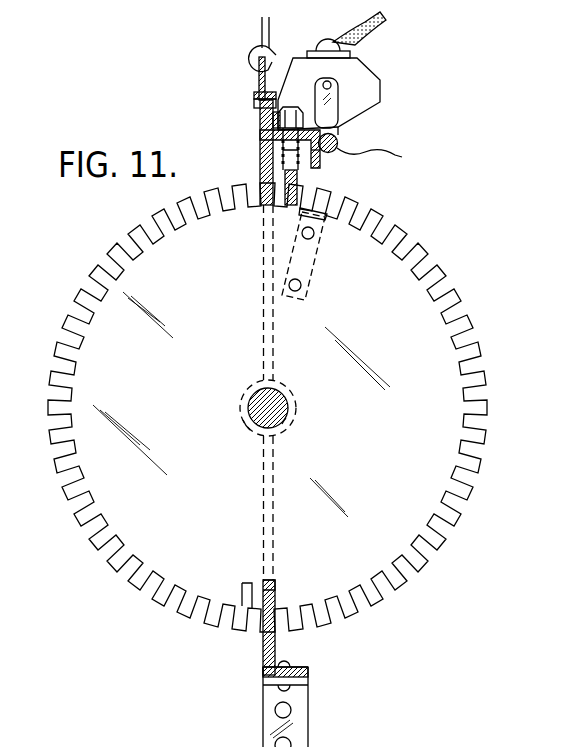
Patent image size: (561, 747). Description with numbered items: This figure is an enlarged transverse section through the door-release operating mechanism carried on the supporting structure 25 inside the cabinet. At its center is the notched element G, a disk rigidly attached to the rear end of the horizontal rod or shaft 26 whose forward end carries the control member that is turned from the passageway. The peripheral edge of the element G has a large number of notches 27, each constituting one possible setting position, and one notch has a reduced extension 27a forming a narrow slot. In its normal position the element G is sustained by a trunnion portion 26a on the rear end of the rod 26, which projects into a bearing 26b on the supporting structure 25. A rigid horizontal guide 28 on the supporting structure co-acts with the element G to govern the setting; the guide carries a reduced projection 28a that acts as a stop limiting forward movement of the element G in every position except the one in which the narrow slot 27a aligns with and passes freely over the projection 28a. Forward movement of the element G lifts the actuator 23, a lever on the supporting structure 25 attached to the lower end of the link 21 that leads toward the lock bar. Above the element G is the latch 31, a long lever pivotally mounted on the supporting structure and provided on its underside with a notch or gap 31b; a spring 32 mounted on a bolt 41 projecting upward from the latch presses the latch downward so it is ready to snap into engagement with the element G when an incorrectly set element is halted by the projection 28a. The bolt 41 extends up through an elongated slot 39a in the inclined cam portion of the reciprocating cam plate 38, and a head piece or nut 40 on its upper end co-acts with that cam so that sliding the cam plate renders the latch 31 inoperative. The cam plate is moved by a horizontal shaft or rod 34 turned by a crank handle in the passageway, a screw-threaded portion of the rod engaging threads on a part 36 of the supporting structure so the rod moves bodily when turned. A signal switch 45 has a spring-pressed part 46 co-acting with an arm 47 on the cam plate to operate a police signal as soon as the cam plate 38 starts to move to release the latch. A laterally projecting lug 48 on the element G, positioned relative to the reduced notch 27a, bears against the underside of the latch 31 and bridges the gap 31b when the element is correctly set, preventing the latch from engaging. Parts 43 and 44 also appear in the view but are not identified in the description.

The link 21 is at (260, 28).
The actuator 23 is at (259, 82).
The supporting structure 25 is at (262, 173).
The rod or shaft 26 is at (250, 401).
The trunnion portion 26a is at (282, 426).
The bearing 26b is at (246, 423).
The notches 27 is at (63, 340).
The reduced extension 27a is at (242, 593).
The guide 28 is at (276, 630).
The reduced projection 28a is at (272, 587).
The latch 31 is at (310, 188).
The notch 31b is at (285, 222).
The spring 32 is at (313, 162).
The shaft or rod 34 is at (338, 133).
The part 36 is at (340, 143).
The cam plate 38 is at (383, 163).
The elongated slot 39a is at (273, 137).
The head piece or nut 40 is at (273, 122).
The bolt 41 is at (287, 110).
The plate 43 is at (256, 96).
The plate 44 is at (258, 108).
The signal switch 45 is at (328, 67).
The switch part 46 is at (340, 82).
The arm 47 is at (338, 95).
The lug 48 is at (317, 254).
The notched element G is at (445, 455).